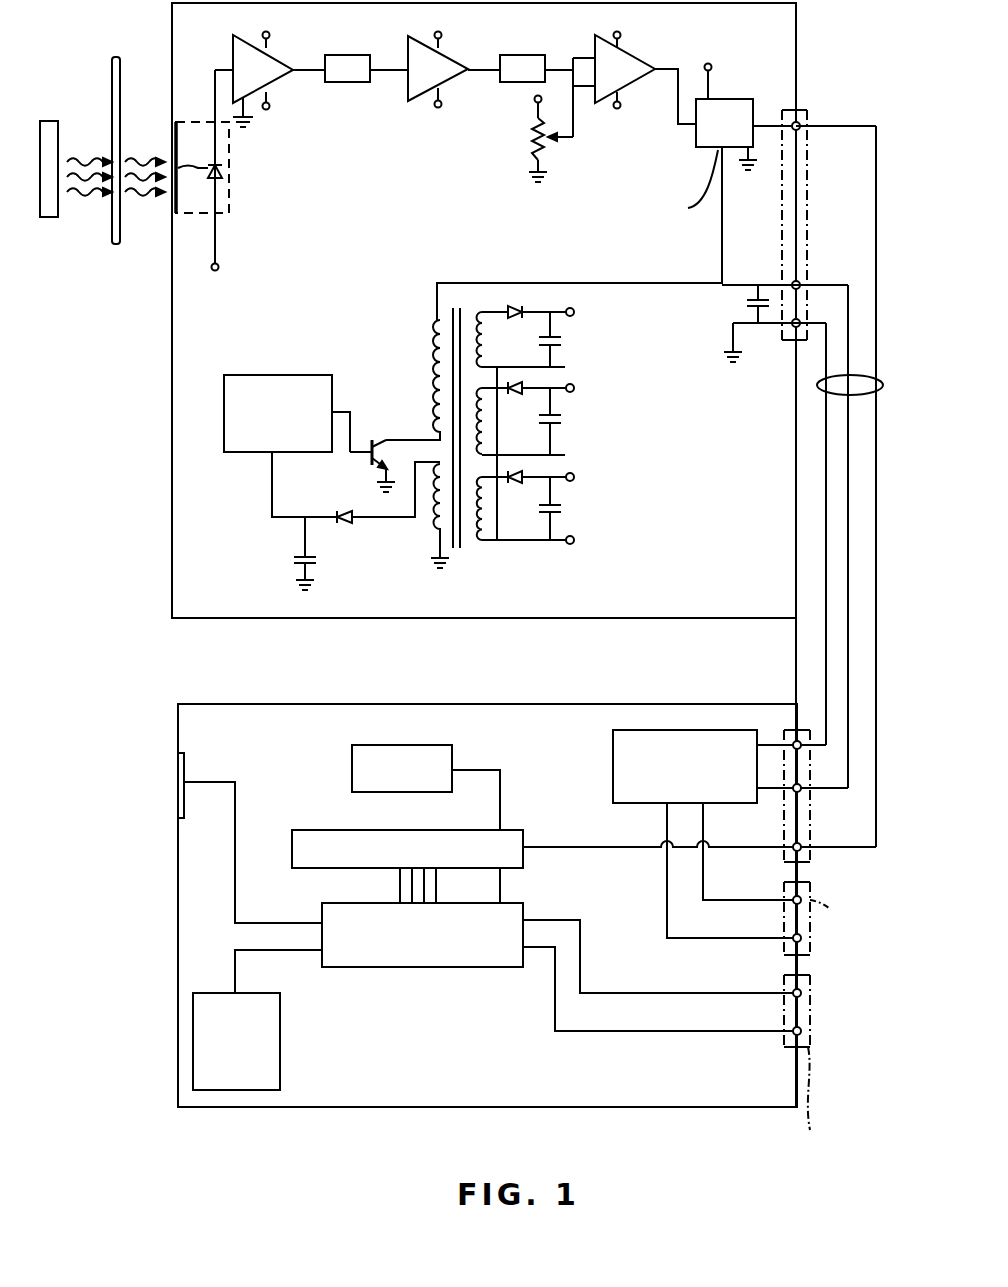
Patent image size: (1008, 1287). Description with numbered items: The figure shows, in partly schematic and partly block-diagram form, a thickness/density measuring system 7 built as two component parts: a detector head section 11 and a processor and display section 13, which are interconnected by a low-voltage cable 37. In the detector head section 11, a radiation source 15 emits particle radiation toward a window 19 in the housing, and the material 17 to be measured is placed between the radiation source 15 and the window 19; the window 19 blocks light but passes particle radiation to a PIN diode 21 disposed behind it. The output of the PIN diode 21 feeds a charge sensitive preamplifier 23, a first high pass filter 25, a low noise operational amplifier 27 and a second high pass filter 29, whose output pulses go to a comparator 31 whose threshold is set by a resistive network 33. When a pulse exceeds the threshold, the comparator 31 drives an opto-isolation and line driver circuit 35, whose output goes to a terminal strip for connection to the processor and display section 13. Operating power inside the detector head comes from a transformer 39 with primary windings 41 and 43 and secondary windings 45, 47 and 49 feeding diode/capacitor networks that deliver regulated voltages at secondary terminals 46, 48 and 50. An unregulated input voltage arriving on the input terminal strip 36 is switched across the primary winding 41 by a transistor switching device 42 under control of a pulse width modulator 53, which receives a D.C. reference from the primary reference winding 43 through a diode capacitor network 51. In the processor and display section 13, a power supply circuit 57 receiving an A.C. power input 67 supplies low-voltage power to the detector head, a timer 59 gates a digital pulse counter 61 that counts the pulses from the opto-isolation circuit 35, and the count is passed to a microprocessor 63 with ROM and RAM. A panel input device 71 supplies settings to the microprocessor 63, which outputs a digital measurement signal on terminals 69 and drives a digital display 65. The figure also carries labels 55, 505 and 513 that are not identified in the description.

The thickness/density measuring system 7 is at (112, 687).
The detector head section 11 is at (458, 618).
The processor and display section 13 is at (250, 704).
The radiation source 15 is at (50, 218).
The material to be measured 17 is at (112, 84).
The window 19 is at (176, 128).
The PIN diode 21 is at (220, 178).
The charge sensitive preamplifier 23 is at (293, 64).
The first high pass filter 25 is at (350, 82).
The low noise operational amplifier 27 is at (417, 98).
The second high pass filter 29 is at (558, 32).
The comparator 31 is at (601, 103).
The resistive network 33 is at (530, 142).
The opto-isolation and line driver circuit 35 is at (742, 108).
The input terminal strip 36 is at (808, 190).
The low-voltage cable 37 is at (817, 385).
The transformer 39 is at (459, 298).
The primary winding 41 is at (437, 326).
The transistor switching device 42 is at (383, 432).
The primary reference winding 43 is at (437, 530).
The secondary winding 45 is at (483, 340).
The secondary terminal 46 is at (575, 320).
The secondary winding 47 is at (484, 447).
The secondary terminal 48 is at (578, 395).
The secondary winding 49 is at (483, 541).
The secondary terminal 50 is at (577, 486).
The diode capacitor network 51 is at (298, 565).
The pulse width modulator 53 is at (250, 452).
The capacitor 55 is at (747, 301).
The power supply circuit 57 is at (613, 762).
The timer 59 is at (450, 757).
The digital pulse counter 61 is at (513, 830).
The microprocessor 63 is at (520, 912).
The digital display 65 is at (186, 768).
The A.C. power input 67 is at (780, 891).
The terminals 69 is at (780, 984).
The panel input device 71 is at (272, 1050).
The ground 505 is at (251, 128).
The detector enclosure 513 is at (194, 222).